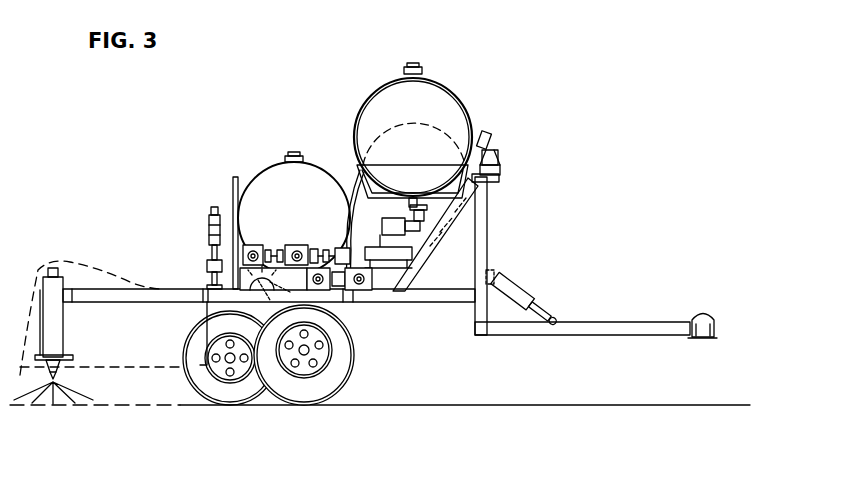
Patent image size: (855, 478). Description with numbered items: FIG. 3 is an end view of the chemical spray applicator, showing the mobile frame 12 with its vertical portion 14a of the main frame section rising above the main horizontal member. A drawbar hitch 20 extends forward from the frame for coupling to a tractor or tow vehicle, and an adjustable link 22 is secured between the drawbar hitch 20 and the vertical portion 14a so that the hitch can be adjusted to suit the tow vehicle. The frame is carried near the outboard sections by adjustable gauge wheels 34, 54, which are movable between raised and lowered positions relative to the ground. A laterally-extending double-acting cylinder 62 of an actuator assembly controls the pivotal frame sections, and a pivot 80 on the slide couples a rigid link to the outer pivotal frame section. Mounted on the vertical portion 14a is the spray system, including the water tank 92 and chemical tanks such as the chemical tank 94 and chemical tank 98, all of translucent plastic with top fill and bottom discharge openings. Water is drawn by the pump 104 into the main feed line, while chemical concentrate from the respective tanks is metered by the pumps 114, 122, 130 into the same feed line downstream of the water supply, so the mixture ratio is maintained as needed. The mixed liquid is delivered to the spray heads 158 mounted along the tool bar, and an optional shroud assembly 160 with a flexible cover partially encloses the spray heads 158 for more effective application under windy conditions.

The frame 12 is at (531, 229).
The vertical portion of the main frame section 14a is at (483, 217).
The drawbar hitch 20 is at (620, 322).
The adjustable link 22 is at (513, 285).
The gauge wheel 34 is at (216, 403).
The gauge wheel 54 is at (302, 404).
The double-acting cylinder 62 is at (207, 250).
The pivot 80 is at (207, 282).
The water tank 92 is at (365, 190).
The chemical tank 94 is at (447, 98).
The chemical tank 98 is at (258, 170).
The pump 104 is at (372, 300).
The pump 114 is at (325, 245).
The pump 122 is at (251, 245).
The pump 130 is at (283, 250).
The spray head 158 is at (63, 346).
The shroud assembly 160 is at (90, 259).